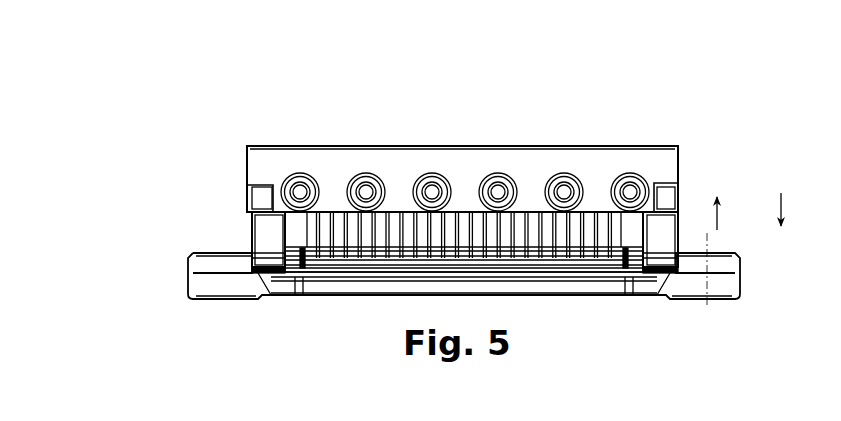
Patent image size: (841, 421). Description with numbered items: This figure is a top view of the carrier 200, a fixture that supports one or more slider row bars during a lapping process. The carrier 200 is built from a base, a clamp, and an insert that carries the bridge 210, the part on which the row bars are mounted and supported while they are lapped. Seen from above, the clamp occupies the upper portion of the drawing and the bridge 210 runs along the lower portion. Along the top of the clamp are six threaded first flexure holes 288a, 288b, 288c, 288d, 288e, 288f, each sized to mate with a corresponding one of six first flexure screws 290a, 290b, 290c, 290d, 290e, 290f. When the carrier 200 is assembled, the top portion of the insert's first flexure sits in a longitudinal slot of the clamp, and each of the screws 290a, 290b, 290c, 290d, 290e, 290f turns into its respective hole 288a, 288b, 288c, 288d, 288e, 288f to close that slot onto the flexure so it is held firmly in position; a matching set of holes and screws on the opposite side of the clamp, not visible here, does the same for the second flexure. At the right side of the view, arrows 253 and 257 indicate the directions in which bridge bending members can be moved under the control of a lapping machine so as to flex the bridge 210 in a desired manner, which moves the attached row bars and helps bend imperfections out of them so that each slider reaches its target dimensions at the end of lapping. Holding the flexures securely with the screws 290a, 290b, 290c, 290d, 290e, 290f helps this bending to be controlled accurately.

The carrier 200 is at (164, 201).
The bridge 210 is at (588, 265).
The arrow 253 is at (717, 225).
The arrow 257 is at (781, 200).
The first flexure hole 288a is at (287, 174).
The first flexure hole 288b is at (353, 174).
The first flexure hole 288c is at (419, 174).
The first flexure hole 288d is at (485, 174).
The first flexure hole 288e is at (551, 174).
The first flexure hole 288f is at (617, 174).
The first flexure screw 290a is at (309, 186).
The first flexure screw 290b is at (375, 186).
The first flexure screw 290c is at (441, 186).
The first flexure screw 290d is at (507, 186).
The first flexure screw 290e is at (573, 186).
The first flexure screw 290f is at (639, 186).